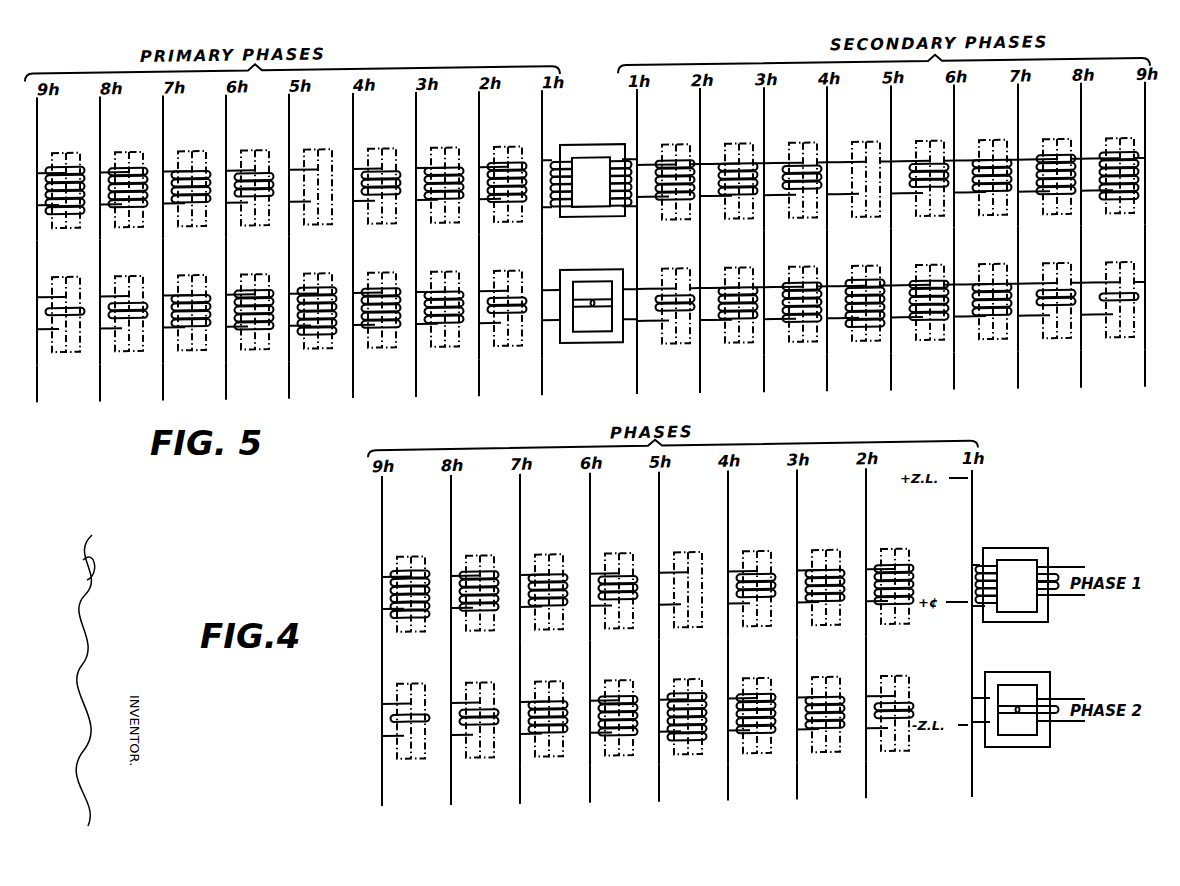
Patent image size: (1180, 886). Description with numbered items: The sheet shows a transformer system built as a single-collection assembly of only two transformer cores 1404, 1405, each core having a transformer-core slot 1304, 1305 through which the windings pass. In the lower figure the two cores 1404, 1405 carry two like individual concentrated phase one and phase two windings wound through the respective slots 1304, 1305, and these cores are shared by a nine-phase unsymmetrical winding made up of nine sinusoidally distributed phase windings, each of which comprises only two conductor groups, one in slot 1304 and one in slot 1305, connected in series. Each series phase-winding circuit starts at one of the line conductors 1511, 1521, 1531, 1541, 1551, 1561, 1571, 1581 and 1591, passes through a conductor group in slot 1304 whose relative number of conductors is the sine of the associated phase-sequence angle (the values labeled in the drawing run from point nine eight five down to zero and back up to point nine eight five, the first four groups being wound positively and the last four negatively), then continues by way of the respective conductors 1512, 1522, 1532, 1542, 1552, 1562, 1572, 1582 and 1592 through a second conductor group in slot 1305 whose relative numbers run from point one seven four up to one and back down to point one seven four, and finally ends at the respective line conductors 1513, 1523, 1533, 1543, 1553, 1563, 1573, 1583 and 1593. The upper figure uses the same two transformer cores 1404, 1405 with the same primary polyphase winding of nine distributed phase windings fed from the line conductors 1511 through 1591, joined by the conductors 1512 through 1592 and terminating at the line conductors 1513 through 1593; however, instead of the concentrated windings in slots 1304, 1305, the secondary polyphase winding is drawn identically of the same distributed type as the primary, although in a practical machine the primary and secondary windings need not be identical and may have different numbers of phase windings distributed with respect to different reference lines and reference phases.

In FIG. 5, the line conductor 1511 is at (544, 119).
In FIG. 4, the line conductor 1511 is at (974, 519).
In FIG. 5, the conductor 1512 is at (544, 243).
In FIG. 4, the conductor 1512 is at (974, 648).
In FIG. 5, the line conductor 1513 is at (544, 373).
In FIG. 4, the line conductor 1513 is at (974, 776).
In FIG. 5, the line conductor 1521 is at (481, 119).
In FIG. 4, the line conductor 1521 is at (868, 527).
In FIG. 5, the conductor 1522 is at (481, 243).
In FIG. 4, the conductor 1522 is at (868, 654).
In FIG. 5, the line conductor 1523 is at (481, 373).
In FIG. 4, the line conductor 1523 is at (868, 781).
In FIG. 5, the line conductor 1531 is at (418, 119).
In FIG. 4, the line conductor 1531 is at (799, 527).
In FIG. 5, the conductor 1532 is at (418, 243).
In FIG. 4, the conductor 1532 is at (799, 654).
In FIG. 5, the line conductor 1533 is at (418, 373).
In FIG. 4, the line conductor 1533 is at (799, 781).
In FIG. 5, the line conductor 1541 is at (355, 119).
In FIG. 4, the line conductor 1541 is at (730, 527).
In FIG. 5, the conductor 1542 is at (355, 243).
In FIG. 4, the conductor 1542 is at (730, 654).
In FIG. 5, the line conductor 1543 is at (355, 373).
In FIG. 4, the line conductor 1543 is at (730, 781).
In FIG. 5, the line conductor 1551 is at (291, 119).
In FIG. 4, the line conductor 1551 is at (661, 527).
In FIG. 5, the conductor 1552 is at (291, 243).
In FIG. 4, the conductor 1552 is at (661, 654).
In FIG. 5, the line conductor 1553 is at (291, 373).
In FIG. 4, the line conductor 1553 is at (661, 781).
In FIG. 5, the line conductor 1561 is at (228, 119).
In FIG. 4, the line conductor 1561 is at (592, 527).
In FIG. 5, the conductor 1562 is at (228, 243).
In FIG. 4, the conductor 1562 is at (592, 654).
In FIG. 5, the line conductor 1563 is at (228, 373).
In FIG. 4, the line conductor 1563 is at (592, 781).
In FIG. 5, the line conductor 1571 is at (165, 119).
In FIG. 4, the line conductor 1571 is at (522, 527).
In FIG. 5, the conductor 1572 is at (165, 243).
In FIG. 4, the conductor 1572 is at (522, 654).
In FIG. 5, the line conductor 1573 is at (165, 373).
In FIG. 4, the line conductor 1573 is at (522, 781).
In FIG. 5, the line conductor 1581 is at (102, 119).
In FIG. 4, the line conductor 1581 is at (453, 527).
In FIG. 5, the conductor 1582 is at (102, 243).
In FIG. 4, the conductor 1582 is at (453, 654).
In FIG. 5, the line conductor 1583 is at (102, 373).
In FIG. 4, the line conductor 1583 is at (453, 781).
In FIG. 5, the line conductor 1591 is at (39, 119).
In FIG. 4, the line conductor 1591 is at (384, 527).
In FIG. 5, the conductor 1592 is at (39, 243).
In FIG. 4, the conductor 1592 is at (384, 654).
In FIG. 5, the line conductor 1593 is at (39, 373).
In FIG. 4, the line conductor 1593 is at (384, 781).
In FIG. 5, the transformer-core slot 1304 is at (588, 199).
In FIG. 4, the transformer-core slot 1304 is at (1028, 603).
In FIG. 5, the transformer core 1404 is at (590, 150).
In FIG. 4, the transformer core 1404 is at (1032, 618).
In FIG. 5, the transformer-core slot 1305 is at (598, 340).
In FIG. 4, the transformer-core slot 1305 is at (1028, 728).
In FIG. 5, the transformer core 1405 is at (600, 324).
In FIG. 4, the transformer core 1405 is at (1030, 746).